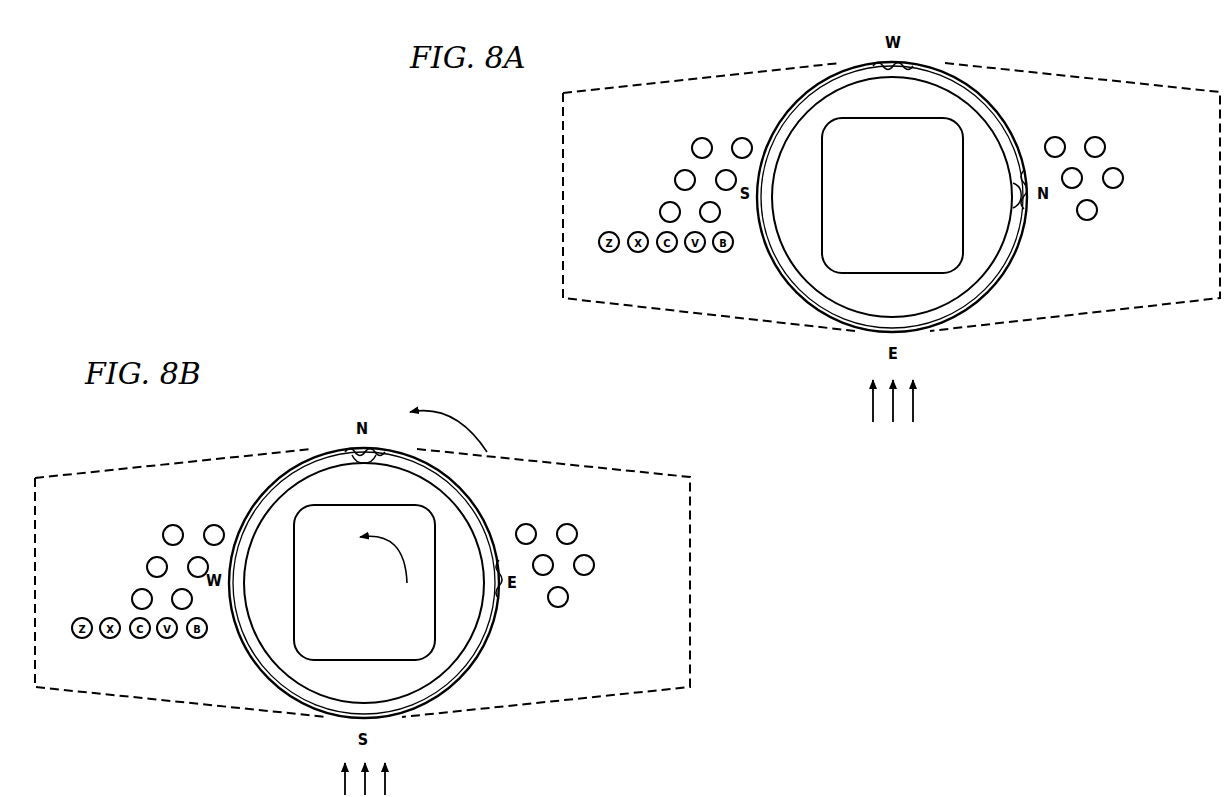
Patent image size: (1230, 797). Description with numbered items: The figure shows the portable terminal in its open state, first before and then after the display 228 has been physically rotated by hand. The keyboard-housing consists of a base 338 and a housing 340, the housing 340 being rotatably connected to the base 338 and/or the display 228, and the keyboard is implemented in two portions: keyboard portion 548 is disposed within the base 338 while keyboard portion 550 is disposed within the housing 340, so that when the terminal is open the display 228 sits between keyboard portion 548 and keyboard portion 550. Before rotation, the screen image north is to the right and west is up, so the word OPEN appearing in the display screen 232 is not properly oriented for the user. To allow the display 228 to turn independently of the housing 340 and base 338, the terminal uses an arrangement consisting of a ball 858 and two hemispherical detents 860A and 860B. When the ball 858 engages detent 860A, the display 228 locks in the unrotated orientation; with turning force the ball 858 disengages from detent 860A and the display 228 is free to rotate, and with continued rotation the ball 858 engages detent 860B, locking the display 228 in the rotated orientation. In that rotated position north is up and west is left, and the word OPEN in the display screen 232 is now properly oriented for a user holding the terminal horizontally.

In FIG. 8A, the display 228 is at (968, 115).
In FIG. 8B, the display 228 is at (440, 504).
In FIG. 8A, the display screen 232 is at (826, 201).
In FIG. 8B, the display screen 232 is at (423, 572).
In FIG. 8A, the base 338 is at (690, 78).
In FIG. 8B, the base 338 is at (205, 460).
In FIG. 8A, the housing 340 is at (1110, 78).
In FIG. 8B, the housing 340 is at (540, 462).
In FIG. 8A, the keyboard portion 548 is at (652, 180).
In FIG. 8B, the keyboard portion 548 is at (125, 572).
In FIG. 8A, the keyboard portion 550 is at (1133, 156).
In FIG. 8B, the keyboard portion 550 is at (598, 542).
In FIG. 8A, the ball 858 is at (1018, 197).
In FIG. 8B, the ball 858 is at (361, 463).
In FIG. 8A, the detent 860A is at (1022, 190).
In FIG. 8B, the detent 860A is at (507, 597).
In FIG. 8A, the detent 860B is at (890, 67).
In FIG. 8B, the detent 860B is at (350, 447).